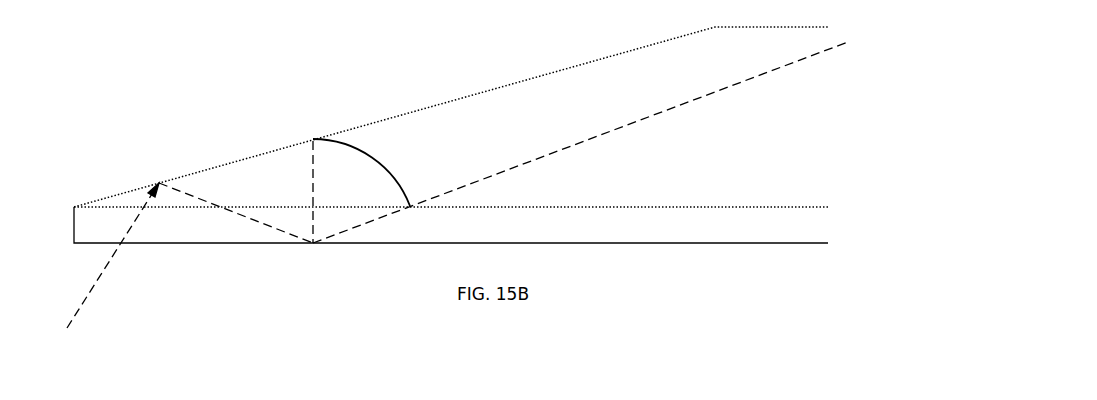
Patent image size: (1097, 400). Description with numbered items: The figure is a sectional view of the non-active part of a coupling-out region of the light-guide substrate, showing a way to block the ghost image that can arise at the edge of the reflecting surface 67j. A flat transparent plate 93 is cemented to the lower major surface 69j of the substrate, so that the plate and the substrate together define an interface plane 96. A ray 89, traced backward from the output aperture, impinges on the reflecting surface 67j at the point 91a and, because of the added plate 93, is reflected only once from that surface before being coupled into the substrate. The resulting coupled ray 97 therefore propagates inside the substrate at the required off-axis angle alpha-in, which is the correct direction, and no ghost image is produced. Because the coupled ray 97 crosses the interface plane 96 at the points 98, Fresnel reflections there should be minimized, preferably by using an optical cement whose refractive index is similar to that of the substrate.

The reflecting surface 67j is at (213, 167).
The lower major surface 69j is at (672, 210).
The ray 89 is at (103, 273).
The point 91a is at (160, 182).
The flat transparent plate 93 is at (178, 243).
The interface plane 96 is at (573, 212).
The coupled ray 97 is at (430, 197).
The points 98 is at (410, 207).